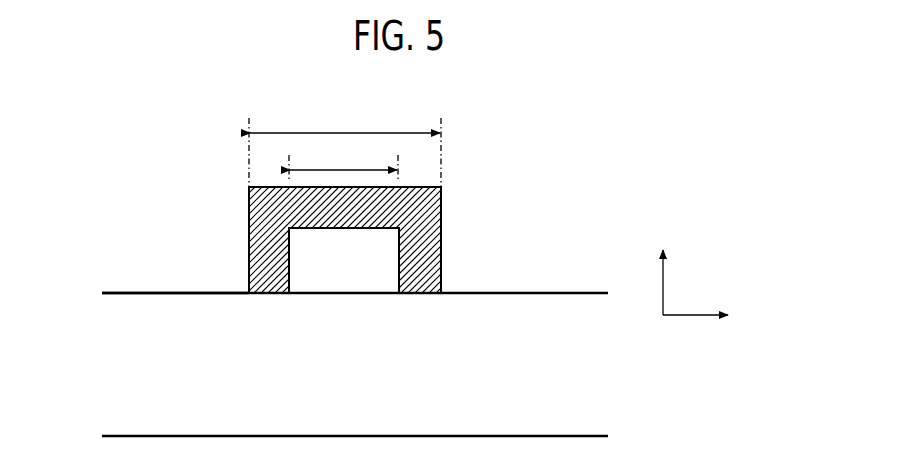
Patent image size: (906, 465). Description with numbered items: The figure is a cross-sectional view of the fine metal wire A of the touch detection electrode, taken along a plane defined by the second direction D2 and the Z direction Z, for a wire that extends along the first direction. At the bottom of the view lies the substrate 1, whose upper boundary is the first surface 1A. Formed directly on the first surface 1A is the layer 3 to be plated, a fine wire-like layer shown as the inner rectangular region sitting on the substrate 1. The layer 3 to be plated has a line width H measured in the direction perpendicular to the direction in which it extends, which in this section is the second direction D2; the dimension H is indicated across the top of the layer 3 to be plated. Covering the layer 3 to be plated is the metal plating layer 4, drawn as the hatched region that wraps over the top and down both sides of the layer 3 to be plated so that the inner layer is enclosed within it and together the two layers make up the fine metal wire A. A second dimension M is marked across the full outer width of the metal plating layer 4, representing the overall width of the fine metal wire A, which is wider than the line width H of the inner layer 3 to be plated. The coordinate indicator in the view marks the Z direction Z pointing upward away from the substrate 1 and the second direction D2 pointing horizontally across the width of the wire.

The substrate 1 is at (134, 371).
The first surface 1A is at (131, 292).
The layer to be plated 3 is at (363, 271).
The metal plating layer 4 is at (430, 205).
The fine metal wire A is at (500, 144).
The line width of the fine metal wire M is at (345, 141).
The line width H is at (343, 159).
The Z direction Z is at (661, 263).
The second direction D2 is at (718, 316).